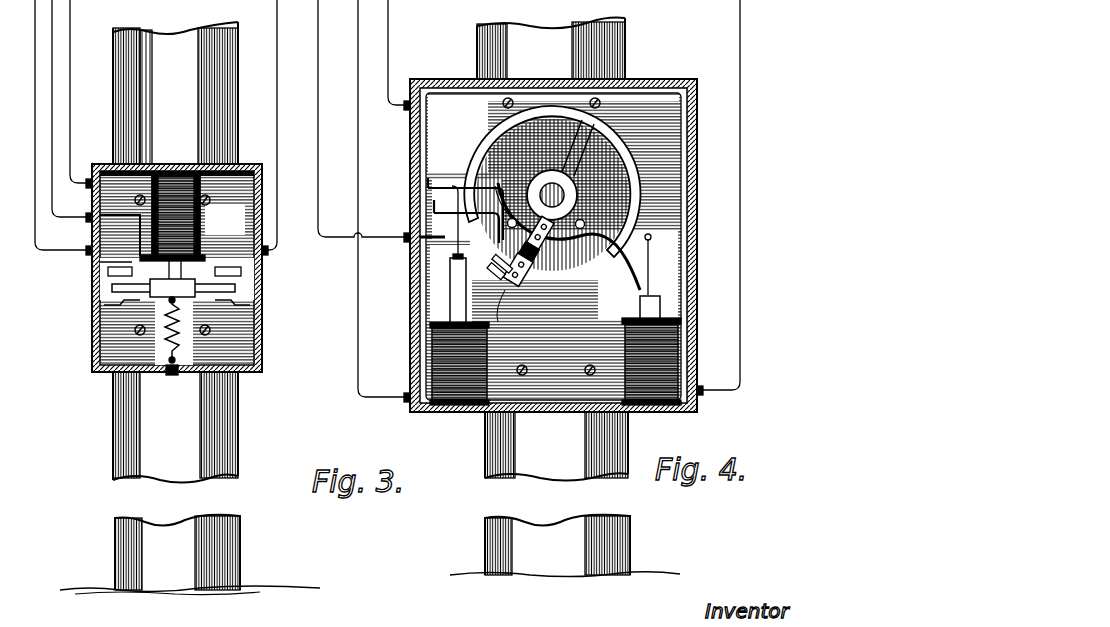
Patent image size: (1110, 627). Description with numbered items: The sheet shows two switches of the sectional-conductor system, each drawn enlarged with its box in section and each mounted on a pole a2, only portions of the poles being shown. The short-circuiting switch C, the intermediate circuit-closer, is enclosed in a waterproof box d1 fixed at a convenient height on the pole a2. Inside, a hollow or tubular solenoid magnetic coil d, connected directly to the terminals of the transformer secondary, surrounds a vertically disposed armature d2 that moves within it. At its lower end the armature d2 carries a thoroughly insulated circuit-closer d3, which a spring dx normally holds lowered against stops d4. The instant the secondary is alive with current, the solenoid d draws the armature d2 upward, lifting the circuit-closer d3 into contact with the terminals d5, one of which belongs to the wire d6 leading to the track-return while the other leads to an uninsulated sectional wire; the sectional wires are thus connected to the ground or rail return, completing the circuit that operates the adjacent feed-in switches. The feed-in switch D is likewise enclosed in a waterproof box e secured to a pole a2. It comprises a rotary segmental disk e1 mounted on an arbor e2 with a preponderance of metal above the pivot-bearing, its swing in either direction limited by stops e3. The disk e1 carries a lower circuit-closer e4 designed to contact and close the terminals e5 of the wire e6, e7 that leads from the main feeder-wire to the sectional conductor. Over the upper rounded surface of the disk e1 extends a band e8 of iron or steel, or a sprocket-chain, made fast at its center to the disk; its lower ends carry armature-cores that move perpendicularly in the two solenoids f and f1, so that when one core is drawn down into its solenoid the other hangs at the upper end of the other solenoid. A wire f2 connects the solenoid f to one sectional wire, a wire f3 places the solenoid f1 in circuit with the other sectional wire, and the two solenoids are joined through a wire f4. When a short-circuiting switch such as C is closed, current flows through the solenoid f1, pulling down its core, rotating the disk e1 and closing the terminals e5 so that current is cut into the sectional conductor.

In FIG. 3, the poles a2 is at (190, 308).
In FIG. 4, the poles a2 is at (625, 452).
In FIG. 3, the short-circuiting switch C is at (177, 255).
In FIG. 4, the solenoid magnetic coil d is at (465, 210).
In FIG. 3, the waterproof box d1 is at (283, 278).
In FIG. 3, the armature d2 is at (183, 283).
In FIG. 3, the circuit-closer d3 is at (236, 291).
In FIG. 3, the stops d4 is at (250, 306).
In FIG. 3, the terminals d5 is at (242, 271).
In FIG. 3, the wire d6 is at (100, 263).
In FIG. 3, the spring dx is at (188, 336).
In FIG. 4, the feed-in switch D is at (567, 236).
In FIG. 4, the waterproof box e is at (688, 258).
In FIG. 4, the rotary segmental disk e1 is at (552, 188).
In FIG. 4, the arbor e2 is at (452, 300).
In FIG. 4, the stops e3 is at (543, 224).
In FIG. 4, the lower circuit-closer e4 is at (516, 282).
In FIG. 4, the terminals e5 is at (526, 274).
In FIG. 4, the wire e6 is at (550, 193).
In FIG. 4, the wire e7 is at (443, 255).
In FIG. 4, the band e8 is at (656, 277).
In FIG. 4, the solenoid f is at (432, 354).
In FIG. 4, the solenoid f1 is at (682, 366).
In FIG. 4, the wire f2 is at (370, 316).
In FIG. 4, the wire f3 is at (741, 290).
In FIG. 4, the wire f4 is at (688, 136).